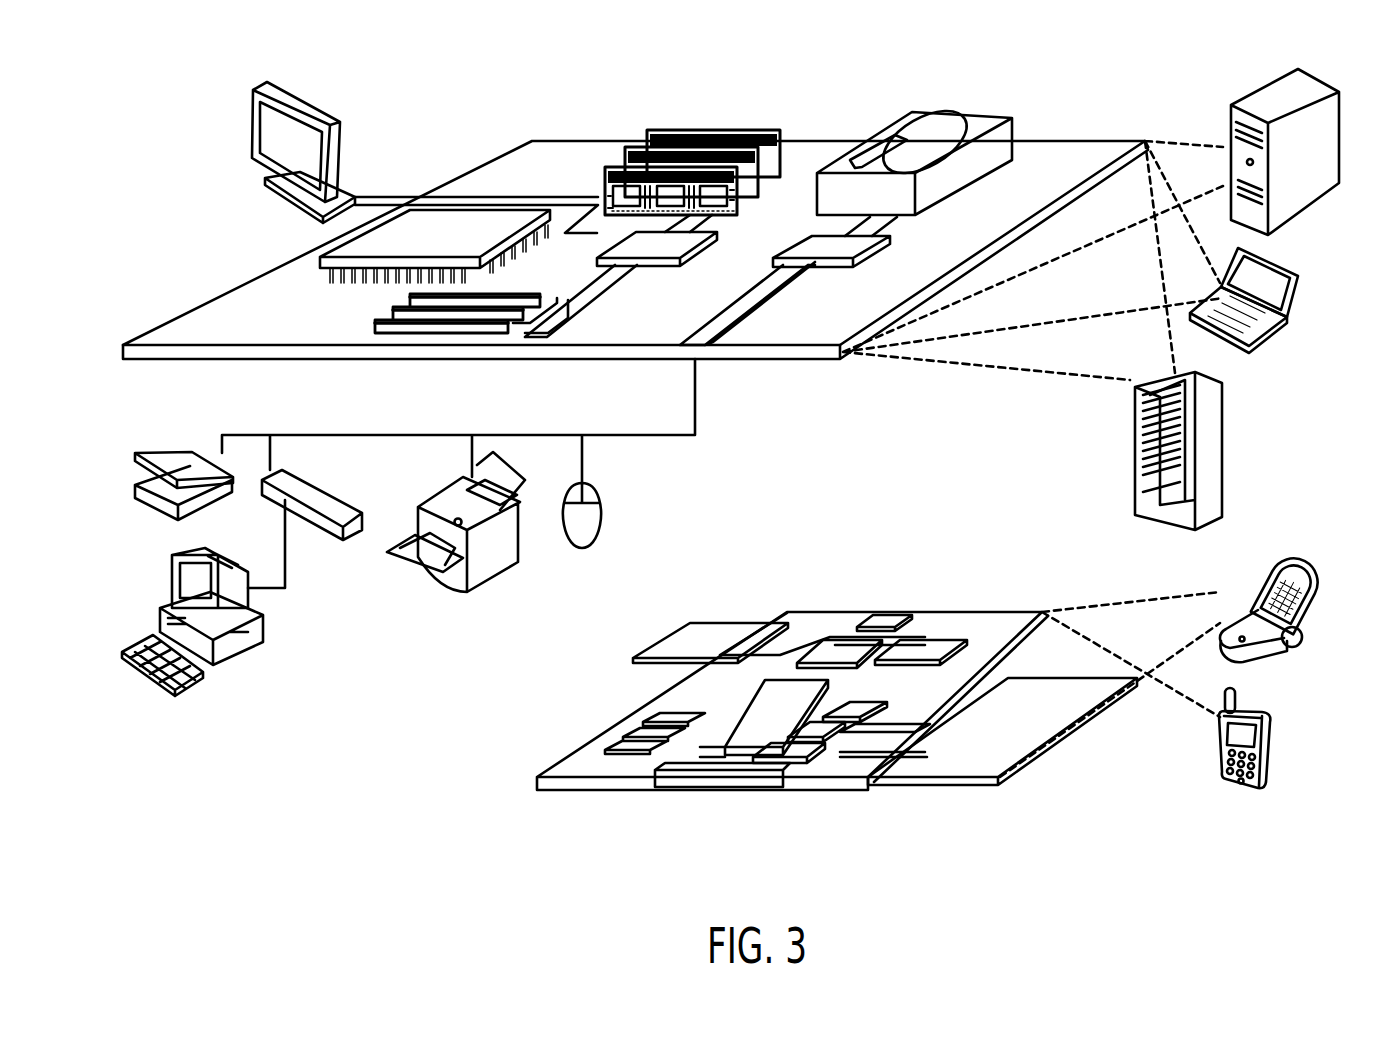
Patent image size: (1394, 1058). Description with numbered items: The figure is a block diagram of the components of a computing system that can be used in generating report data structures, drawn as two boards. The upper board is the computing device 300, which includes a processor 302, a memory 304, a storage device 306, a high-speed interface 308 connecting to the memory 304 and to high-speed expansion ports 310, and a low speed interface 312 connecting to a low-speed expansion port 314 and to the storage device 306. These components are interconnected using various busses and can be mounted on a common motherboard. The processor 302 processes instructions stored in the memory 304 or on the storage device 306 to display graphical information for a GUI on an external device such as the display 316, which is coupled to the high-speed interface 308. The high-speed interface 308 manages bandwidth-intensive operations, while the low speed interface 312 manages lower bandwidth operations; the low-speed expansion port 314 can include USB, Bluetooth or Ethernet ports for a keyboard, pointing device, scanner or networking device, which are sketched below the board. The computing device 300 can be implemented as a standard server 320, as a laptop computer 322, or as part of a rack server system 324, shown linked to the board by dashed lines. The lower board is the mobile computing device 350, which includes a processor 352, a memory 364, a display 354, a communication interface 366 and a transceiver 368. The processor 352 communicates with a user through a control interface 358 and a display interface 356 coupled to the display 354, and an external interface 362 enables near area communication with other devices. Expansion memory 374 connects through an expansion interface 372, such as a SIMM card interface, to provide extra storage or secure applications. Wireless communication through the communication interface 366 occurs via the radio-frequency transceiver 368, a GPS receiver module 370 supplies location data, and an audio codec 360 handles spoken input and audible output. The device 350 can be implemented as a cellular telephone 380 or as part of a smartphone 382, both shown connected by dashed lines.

The computing device 300 is at (477, 82).
The processor 302 is at (320, 257).
The memory 304 is at (703, 127).
The storage device 306 is at (908, 118).
The high-speed interface 308 is at (604, 228).
The high-speed expansion ports 310 is at (390, 312).
The low speed interface 312 is at (804, 240).
The low-speed expansion port 314 is at (700, 355).
The display 316 is at (252, 89).
The standard server 320 is at (1228, 118).
The laptop computer 322 is at (1265, 333).
The rack server system 324 is at (1132, 487).
The mobile computing device 350 is at (478, 785).
The processor 352 is at (728, 752).
The display 354 is at (933, 768).
The display interface 356 is at (777, 764).
The control interface 358 is at (815, 730).
The audio codec 360 is at (852, 706).
The external interface 362 is at (675, 782).
The memory 364 is at (638, 722).
The communication interface 366 is at (832, 645).
The transceiver 368 is at (922, 650).
The GPS receiver module 370 is at (887, 617).
The expansion interface 372 is at (763, 620).
The expansion memory 374 is at (663, 640).
The cellular telephone 380 is at (1297, 572).
The smartphone 382 is at (1222, 778).